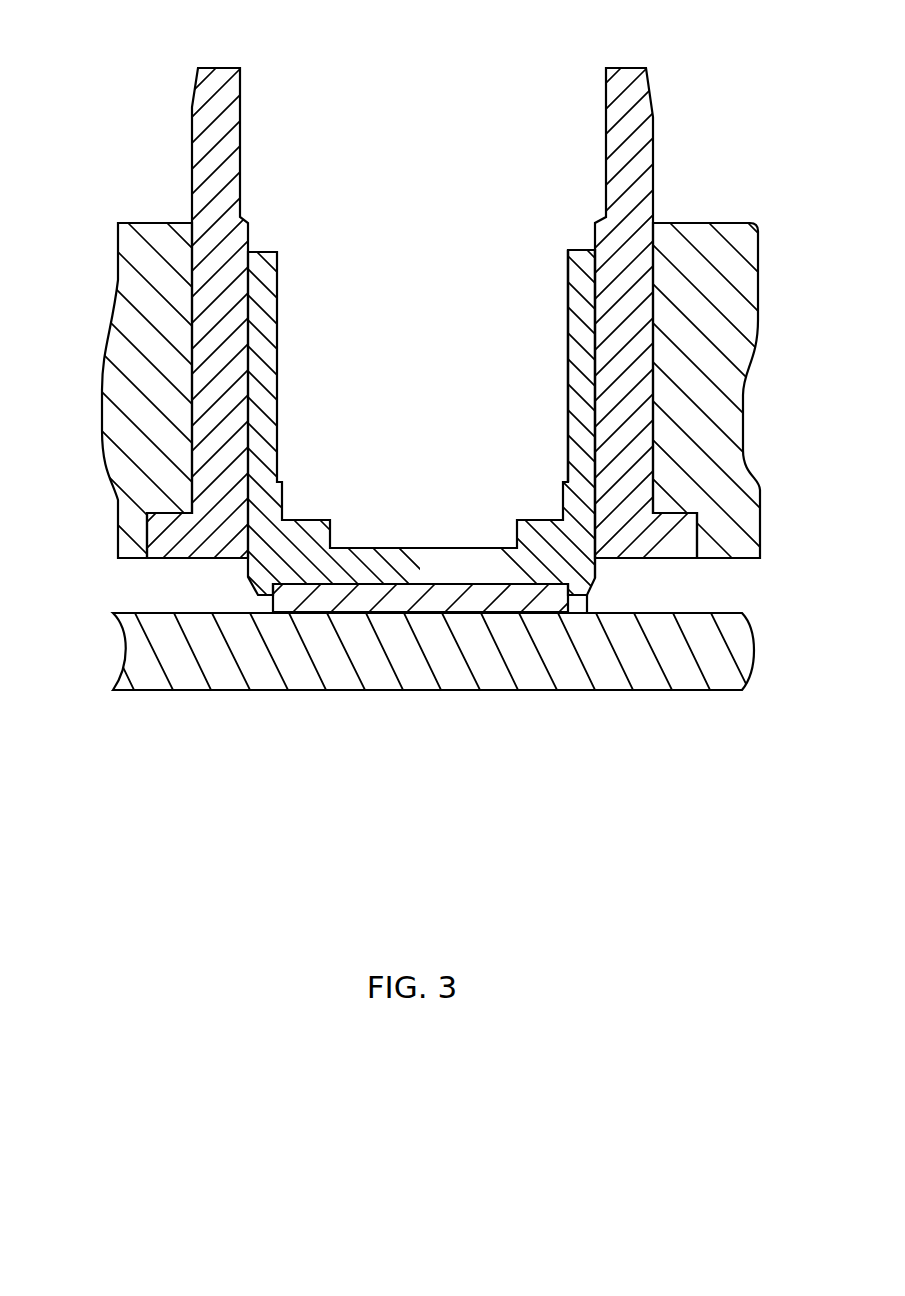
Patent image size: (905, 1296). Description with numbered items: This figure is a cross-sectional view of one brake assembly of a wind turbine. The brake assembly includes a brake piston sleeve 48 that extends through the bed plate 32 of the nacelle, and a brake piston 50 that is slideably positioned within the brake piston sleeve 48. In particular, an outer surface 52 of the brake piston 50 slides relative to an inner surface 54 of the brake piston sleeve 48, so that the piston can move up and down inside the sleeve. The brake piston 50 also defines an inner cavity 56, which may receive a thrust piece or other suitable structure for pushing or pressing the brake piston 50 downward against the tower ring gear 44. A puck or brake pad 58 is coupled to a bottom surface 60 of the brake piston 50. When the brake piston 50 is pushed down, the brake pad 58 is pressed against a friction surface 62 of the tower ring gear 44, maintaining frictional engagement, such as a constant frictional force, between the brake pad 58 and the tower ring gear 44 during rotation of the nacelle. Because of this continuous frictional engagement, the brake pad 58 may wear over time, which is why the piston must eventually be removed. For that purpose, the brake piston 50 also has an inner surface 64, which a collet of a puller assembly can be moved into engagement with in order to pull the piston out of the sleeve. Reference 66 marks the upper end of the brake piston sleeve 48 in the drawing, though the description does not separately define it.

The bed plate 32 is at (753, 293).
The tower ring gear 44 is at (742, 690).
The brake piston sleeve 48 is at (208, 193).
The brake piston 50 is at (263, 397).
The outer surface 52 is at (597, 442).
The inner surface 54 is at (607, 98).
The inner cavity 56 is at (422, 285).
The brake pad 58 is at (273, 605).
The bottom surface 60 is at (585, 598).
The friction surface 62 is at (742, 612).
The inner surface 64 is at (568, 443).
The tip of first post 66 is at (220, 68).